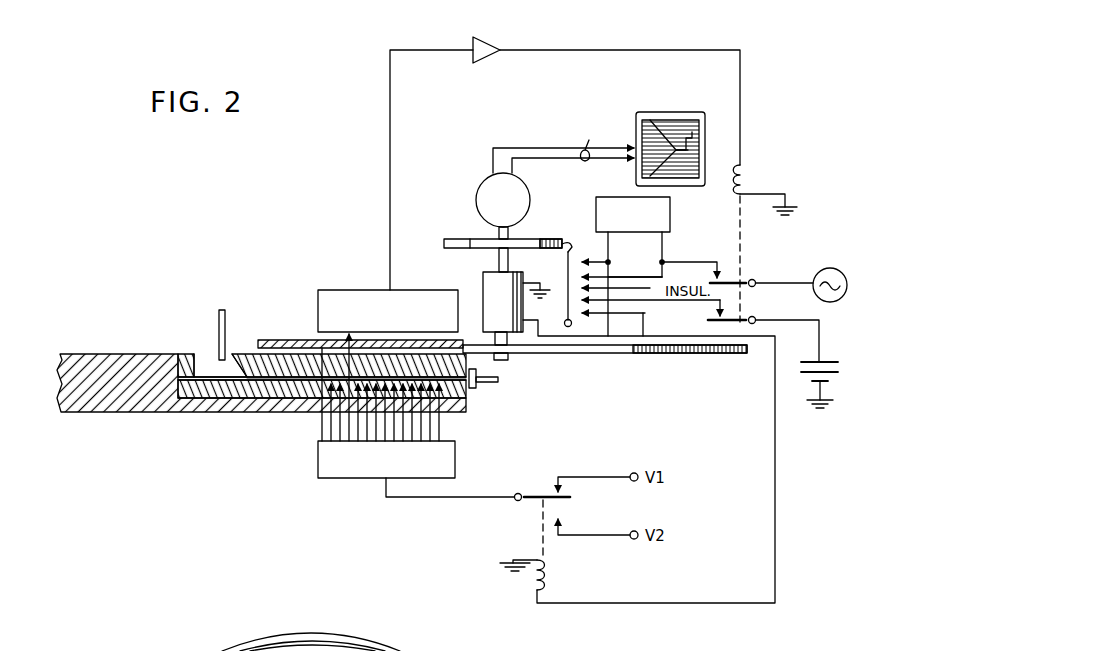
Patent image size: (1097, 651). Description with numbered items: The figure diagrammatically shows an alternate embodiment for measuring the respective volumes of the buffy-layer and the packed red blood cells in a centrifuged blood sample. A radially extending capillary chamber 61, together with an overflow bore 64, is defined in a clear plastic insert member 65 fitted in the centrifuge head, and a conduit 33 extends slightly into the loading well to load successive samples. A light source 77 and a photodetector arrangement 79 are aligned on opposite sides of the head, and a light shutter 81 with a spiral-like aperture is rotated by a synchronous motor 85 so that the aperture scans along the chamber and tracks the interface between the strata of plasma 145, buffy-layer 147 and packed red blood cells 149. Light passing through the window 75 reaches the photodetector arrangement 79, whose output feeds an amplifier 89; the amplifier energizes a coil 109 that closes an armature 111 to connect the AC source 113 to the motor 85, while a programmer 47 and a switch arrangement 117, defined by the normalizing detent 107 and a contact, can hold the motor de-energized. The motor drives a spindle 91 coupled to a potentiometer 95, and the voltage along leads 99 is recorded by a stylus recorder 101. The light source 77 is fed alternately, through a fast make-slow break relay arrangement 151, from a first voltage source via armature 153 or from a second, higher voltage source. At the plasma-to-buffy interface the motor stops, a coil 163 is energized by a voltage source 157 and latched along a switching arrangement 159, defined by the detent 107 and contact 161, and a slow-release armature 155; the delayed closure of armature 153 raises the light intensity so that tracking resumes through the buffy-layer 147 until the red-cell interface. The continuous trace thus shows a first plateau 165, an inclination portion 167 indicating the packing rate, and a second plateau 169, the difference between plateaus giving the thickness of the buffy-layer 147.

The conduit 33 is at (217, 314).
The programmer 47 is at (655, 216).
The capillary chamber 61 is at (257, 381).
The overflow bore 64 is at (280, 380).
The insert member 65 is at (192, 346).
The window 75 is at (432, 412).
The light source 77 is at (355, 479).
The photodetector arrangement 79 is at (327, 290).
The light shutter 81 is at (320, 340).
The synchronous motor 85 is at (492, 292).
The amplifier 89 is at (486, 42).
The spindle 91 is at (498, 235).
The potentiometer 95 is at (477, 197).
The leads 99 is at (563, 146).
The stylus recorder 101 is at (651, 116).
The normalizing detent 107 is at (567, 262).
The coil 109 is at (746, 177).
The armature 111 is at (743, 281).
The AC source 113 is at (822, 268).
The switch arrangement 117 is at (614, 276).
The plasma 145 is at (293, 382).
The buffy-layer 147 is at (337, 382).
The packed red blood cells 149 is at (469, 390).
The relay arrangement 151 is at (508, 541).
The armature 153 is at (540, 493).
The slow-release armature 155 is at (747, 318).
The voltage source 157 is at (822, 360).
The switching arrangement 159 is at (566, 238).
The contact 161 is at (584, 302).
The coil 163 is at (547, 577).
The plateau 165 is at (650, 119).
The inclination portion 167 is at (642, 170).
The second plateau 169 is at (691, 131).